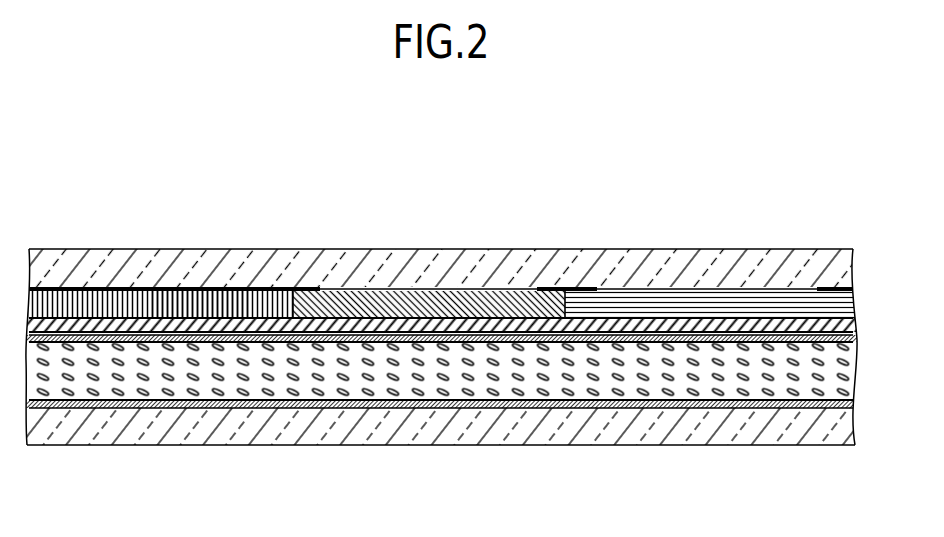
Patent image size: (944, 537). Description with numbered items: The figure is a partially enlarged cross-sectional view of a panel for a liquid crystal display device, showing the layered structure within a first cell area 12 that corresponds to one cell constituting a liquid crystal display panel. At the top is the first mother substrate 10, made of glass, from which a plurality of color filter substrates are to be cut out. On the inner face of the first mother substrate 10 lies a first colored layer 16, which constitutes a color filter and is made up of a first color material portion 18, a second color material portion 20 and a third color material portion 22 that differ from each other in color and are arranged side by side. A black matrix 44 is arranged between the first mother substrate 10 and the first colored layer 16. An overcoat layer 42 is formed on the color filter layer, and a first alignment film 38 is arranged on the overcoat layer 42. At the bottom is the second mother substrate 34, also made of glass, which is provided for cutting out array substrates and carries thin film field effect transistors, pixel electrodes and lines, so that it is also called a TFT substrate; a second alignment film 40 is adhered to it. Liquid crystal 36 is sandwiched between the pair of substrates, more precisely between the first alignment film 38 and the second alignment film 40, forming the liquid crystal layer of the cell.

The first mother substrate 10 is at (738, 249).
The first cell area 12 is at (673, 190).
The first colored layer 16 is at (607, 190).
The first color material portion 18 is at (240, 296).
The second color material portion 20 is at (432, 296).
The third color material portion 22 is at (625, 298).
The second mother substrate 34 is at (612, 446).
The liquid crystal 36 is at (345, 392).
The first alignment film 38 is at (95, 317).
The second alignment film 40 is at (84, 408).
The overcoat layer 42 is at (190, 317).
The black matrix 44 is at (822, 288).